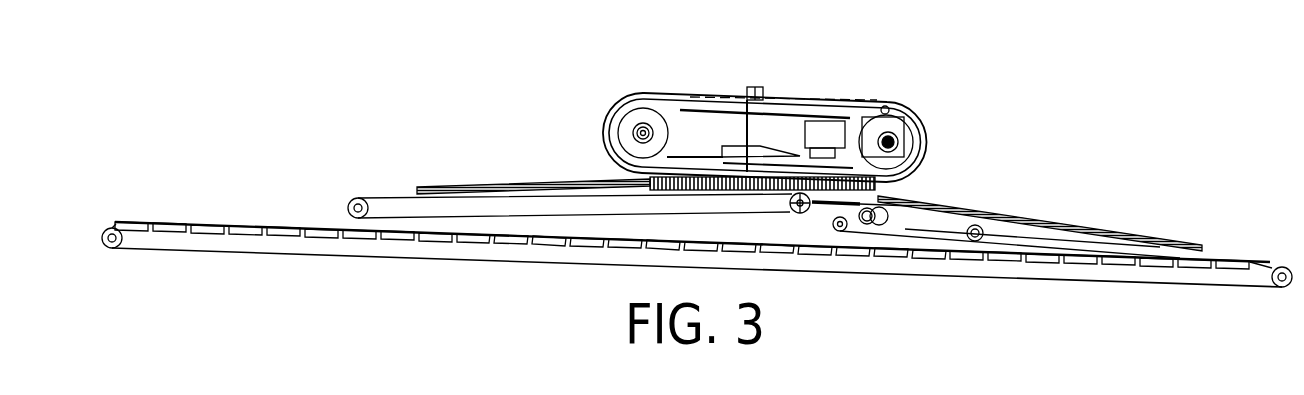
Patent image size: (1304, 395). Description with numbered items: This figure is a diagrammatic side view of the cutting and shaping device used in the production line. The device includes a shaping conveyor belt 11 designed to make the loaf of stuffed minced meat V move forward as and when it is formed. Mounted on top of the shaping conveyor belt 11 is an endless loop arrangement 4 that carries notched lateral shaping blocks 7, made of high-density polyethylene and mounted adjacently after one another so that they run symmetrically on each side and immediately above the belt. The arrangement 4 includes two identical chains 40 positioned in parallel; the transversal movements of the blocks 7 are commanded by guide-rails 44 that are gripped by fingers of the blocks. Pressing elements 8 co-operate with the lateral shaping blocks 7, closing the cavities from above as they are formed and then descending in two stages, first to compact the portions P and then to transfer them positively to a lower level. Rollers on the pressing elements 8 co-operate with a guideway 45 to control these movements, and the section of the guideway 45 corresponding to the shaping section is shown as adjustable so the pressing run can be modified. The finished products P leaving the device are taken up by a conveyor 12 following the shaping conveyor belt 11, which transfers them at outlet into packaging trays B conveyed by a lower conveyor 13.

The endless loop arrangement 4 is at (802, 110).
The guideway 45 is at (698, 100).
The guide-rails 44 is at (880, 107).
The lateral shaping blocks 7 is at (755, 90).
The pressing elements 8 is at (772, 102).
The chains 40 is at (800, 113).
The shaping conveyor belt 11 is at (583, 207).
The conveyor 12 is at (1010, 225).
The lower conveyor 13 is at (1098, 270).
The loaf of stuffed minced meat V is at (503, 185).
The finished products P is at (1063, 223).
The packaging trays B is at (1252, 258).